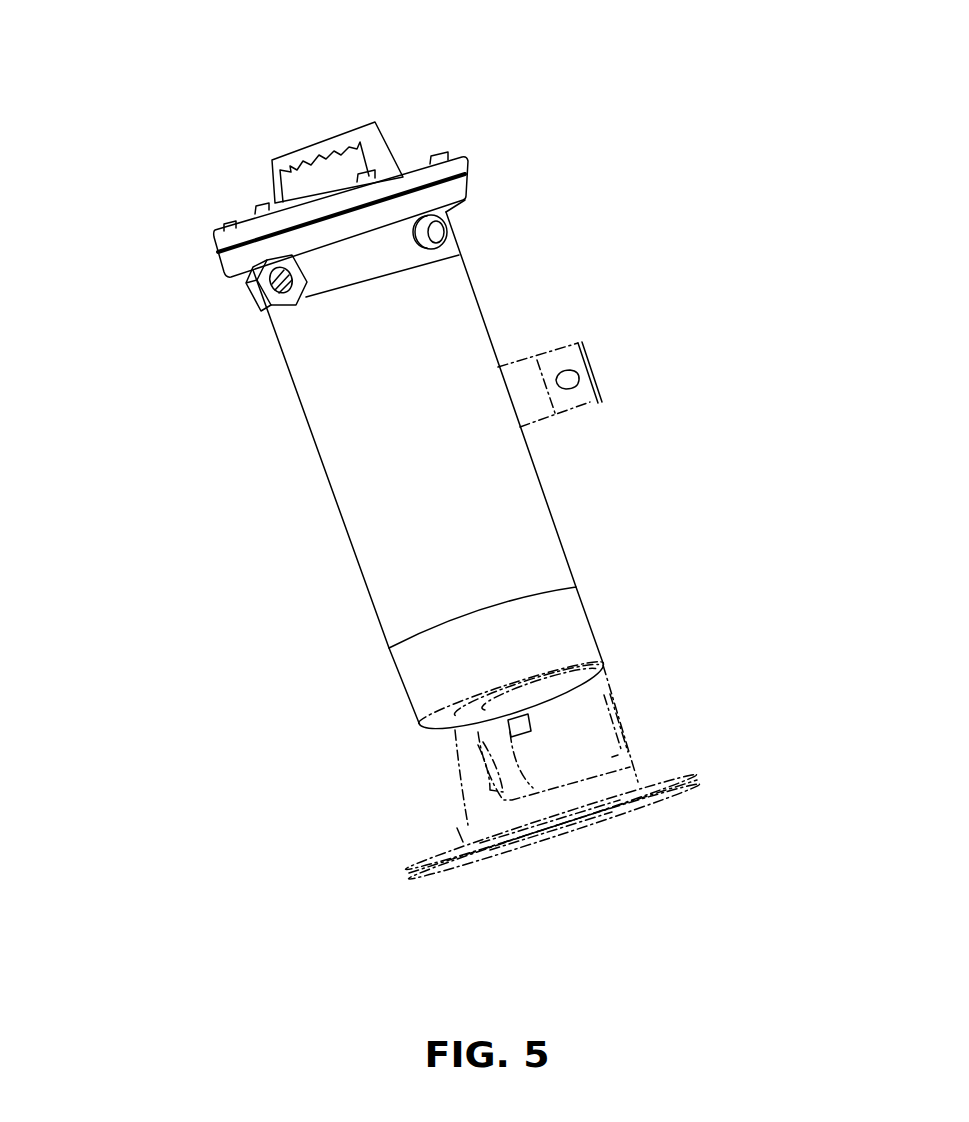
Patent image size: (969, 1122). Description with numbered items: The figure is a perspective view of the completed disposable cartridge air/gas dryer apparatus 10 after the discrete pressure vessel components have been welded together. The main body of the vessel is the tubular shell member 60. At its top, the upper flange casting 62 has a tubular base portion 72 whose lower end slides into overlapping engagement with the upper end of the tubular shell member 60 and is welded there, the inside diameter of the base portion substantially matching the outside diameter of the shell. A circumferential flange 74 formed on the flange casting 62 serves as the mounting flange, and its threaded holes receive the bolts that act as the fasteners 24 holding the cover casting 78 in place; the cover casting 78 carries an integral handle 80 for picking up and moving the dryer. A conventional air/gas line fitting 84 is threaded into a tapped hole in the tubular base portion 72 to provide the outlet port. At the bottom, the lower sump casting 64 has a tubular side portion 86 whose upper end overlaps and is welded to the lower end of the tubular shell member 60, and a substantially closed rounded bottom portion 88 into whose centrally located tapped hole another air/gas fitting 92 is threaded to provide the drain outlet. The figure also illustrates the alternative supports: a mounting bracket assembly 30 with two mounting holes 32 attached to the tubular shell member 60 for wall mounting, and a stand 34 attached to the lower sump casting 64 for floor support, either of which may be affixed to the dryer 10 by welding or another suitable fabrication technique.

The disposable cartridge air/gas dryer apparatus 10 is at (717, 183).
The fasteners 24 is at (258, 209).
The mounting bracket assembly 30 is at (581, 352).
The mounting holes 32 is at (568, 384).
The stand 34 is at (480, 810).
The tubular shell member 60 is at (325, 470).
The upper flange casting 62 is at (490, 207).
The lower sump casting 64 is at (368, 692).
The tubular base portion 72 is at (388, 255).
The circumferential flange 74 is at (226, 268).
The cover casting 78 is at (420, 158).
The integral handle 80 is at (337, 142).
The air/gas line fitting 84 is at (448, 237).
The tubular side portion 86 is at (268, 309).
The rounded bottom portion 88 is at (455, 750).
The air/gas fitting 92 is at (529, 734).